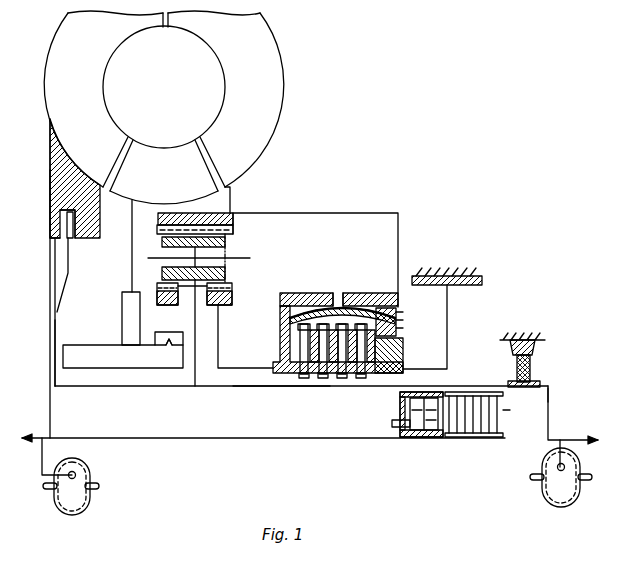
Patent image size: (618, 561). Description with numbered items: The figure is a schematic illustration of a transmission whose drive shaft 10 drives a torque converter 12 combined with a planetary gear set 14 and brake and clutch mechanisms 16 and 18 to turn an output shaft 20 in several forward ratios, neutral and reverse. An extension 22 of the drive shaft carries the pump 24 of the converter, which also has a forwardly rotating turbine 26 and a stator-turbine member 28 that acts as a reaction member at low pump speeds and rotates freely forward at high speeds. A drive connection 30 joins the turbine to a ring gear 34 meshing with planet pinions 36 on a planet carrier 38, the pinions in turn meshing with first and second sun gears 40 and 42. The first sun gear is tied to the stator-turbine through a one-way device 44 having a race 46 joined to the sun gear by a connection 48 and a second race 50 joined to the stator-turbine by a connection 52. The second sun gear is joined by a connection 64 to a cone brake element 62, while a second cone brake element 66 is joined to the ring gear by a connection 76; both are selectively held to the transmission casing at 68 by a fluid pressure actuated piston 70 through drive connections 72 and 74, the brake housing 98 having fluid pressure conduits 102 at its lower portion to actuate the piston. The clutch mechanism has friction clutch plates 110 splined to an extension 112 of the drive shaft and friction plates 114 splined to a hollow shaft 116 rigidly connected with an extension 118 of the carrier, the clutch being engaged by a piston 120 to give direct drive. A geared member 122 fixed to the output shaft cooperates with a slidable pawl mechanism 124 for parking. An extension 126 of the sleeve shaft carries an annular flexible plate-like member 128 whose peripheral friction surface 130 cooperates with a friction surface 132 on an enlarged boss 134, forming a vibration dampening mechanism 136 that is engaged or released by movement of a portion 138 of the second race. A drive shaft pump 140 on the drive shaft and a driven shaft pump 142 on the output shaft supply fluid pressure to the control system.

The drive shaft 10 is at (48, 405).
The torque converter 12 is at (283, 58).
The planetary gear set 14 is at (250, 258).
The brake mechanism 16 is at (338, 292).
The clutch mechanism 18 is at (548, 386).
The output shaft 20 is at (517, 402).
The extension 22 is at (50, 285).
The pump 24 is at (76, 42).
The turbine 26 is at (268, 90).
The stator-turbine member 28 is at (168, 158).
The drive connection 30 is at (233, 200).
The ring gear 34 is at (200, 213).
The planet pinions 36 is at (233, 232).
The planet carrier 38 is at (240, 258).
The first sun gear 40 is at (160, 297).
The second sun gear 42 is at (232, 295).
The one-way device 44 is at (165, 335).
The race 46 is at (148, 350).
The connection 48 is at (170, 330).
The second race 50 is at (100, 350).
The connection 52 is at (132, 240).
The cone brake element 62 is at (300, 292).
The connection 64 is at (275, 355).
The cone brake element 66 is at (375, 292).
The transmission casing connection 68 is at (460, 276).
The piston 70 is at (330, 310).
The drive connection 72 is at (401, 361).
The drive connection 74 is at (448, 330).
The connection 76 is at (347, 212).
The brake housing 98 is at (368, 379).
The fluid pressure conduits 102 is at (326, 379).
The friction clutch plates 110 is at (470, 438).
The extension 112 is at (215, 439).
The friction plates 114 is at (500, 412).
The hollow shaft 116 is at (285, 387).
The extension 118 is at (196, 387).
The piston 120 is at (430, 438).
The geared member 122 is at (510, 383).
The pawl mechanism 124 is at (522, 343).
The extension 126 is at (76, 387).
The flexible plate-like member 128 is at (62, 305).
The friction surface 130 is at (65, 222).
The friction surface 132 is at (100, 224).
The enlarged boss 134 is at (62, 160).
The vibration dampening mechanism 136 is at (57, 193).
The portion 138 is at (58, 340).
The drive shaft pump 140 is at (90, 497).
The driven shaft pump 142 is at (542, 497).